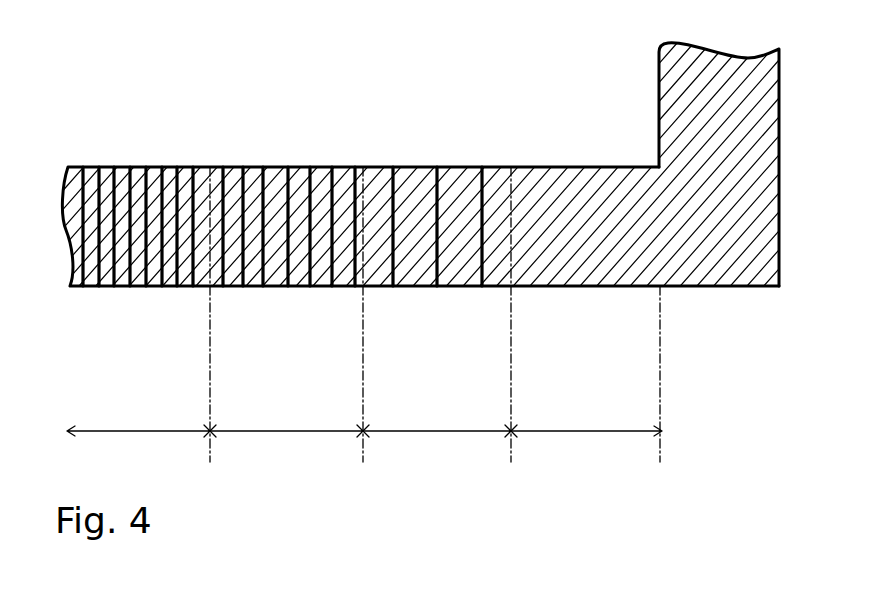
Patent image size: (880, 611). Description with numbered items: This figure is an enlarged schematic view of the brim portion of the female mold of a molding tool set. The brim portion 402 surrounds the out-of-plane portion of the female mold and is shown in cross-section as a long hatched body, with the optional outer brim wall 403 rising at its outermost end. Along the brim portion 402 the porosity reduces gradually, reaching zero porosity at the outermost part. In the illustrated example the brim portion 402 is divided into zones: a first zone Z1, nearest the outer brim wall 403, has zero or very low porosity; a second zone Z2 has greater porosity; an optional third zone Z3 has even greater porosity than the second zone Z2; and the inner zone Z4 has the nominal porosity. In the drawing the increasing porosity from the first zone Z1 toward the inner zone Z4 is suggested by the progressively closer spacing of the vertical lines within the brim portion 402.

The brim portion 402 is at (411, 147).
The outer brim wall 403 is at (652, 116).
The first zone Z1 is at (586, 375).
The second zone Z2 is at (440, 315).
The third zone Z3 is at (289, 315).
The inner zone Z4 is at (141, 315).